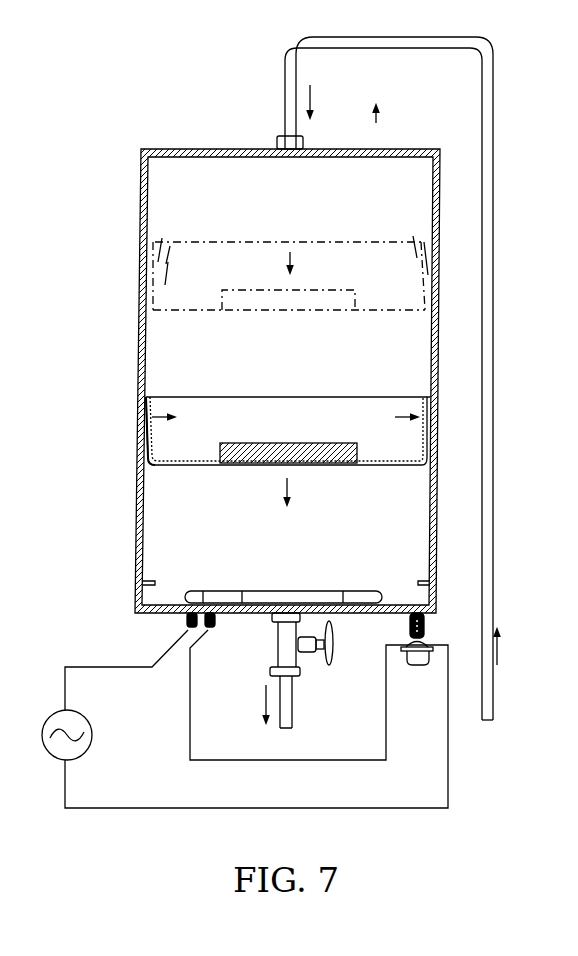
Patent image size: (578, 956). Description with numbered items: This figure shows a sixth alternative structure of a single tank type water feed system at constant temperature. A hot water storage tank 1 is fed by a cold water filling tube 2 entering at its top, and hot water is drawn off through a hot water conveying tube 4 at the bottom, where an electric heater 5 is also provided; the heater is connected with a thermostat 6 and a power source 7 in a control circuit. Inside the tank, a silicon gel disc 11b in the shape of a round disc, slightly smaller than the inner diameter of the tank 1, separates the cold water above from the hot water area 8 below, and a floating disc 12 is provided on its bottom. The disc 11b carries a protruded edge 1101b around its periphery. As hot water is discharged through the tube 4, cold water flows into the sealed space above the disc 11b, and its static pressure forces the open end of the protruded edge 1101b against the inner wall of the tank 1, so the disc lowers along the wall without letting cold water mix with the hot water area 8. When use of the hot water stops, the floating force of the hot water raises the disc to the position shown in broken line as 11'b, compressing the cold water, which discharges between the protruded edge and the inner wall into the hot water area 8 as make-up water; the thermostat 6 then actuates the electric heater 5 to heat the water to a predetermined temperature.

The hot water storage tank 1 is at (356, 150).
The cold water filling tube 2 is at (490, 487).
The hot water conveying tube 4 is at (296, 688).
The electric heater 5 is at (350, 588).
The thermostat 6 is at (415, 665).
The power source 7 is at (60, 712).
The hot water area 8 is at (415, 515).
The silicon gel disc 11b is at (420, 427).
The silicon gel disc in raised position 11'b is at (352, 273).
The floating disc 12 is at (322, 463).
The protruded edge 1101b is at (142, 428).